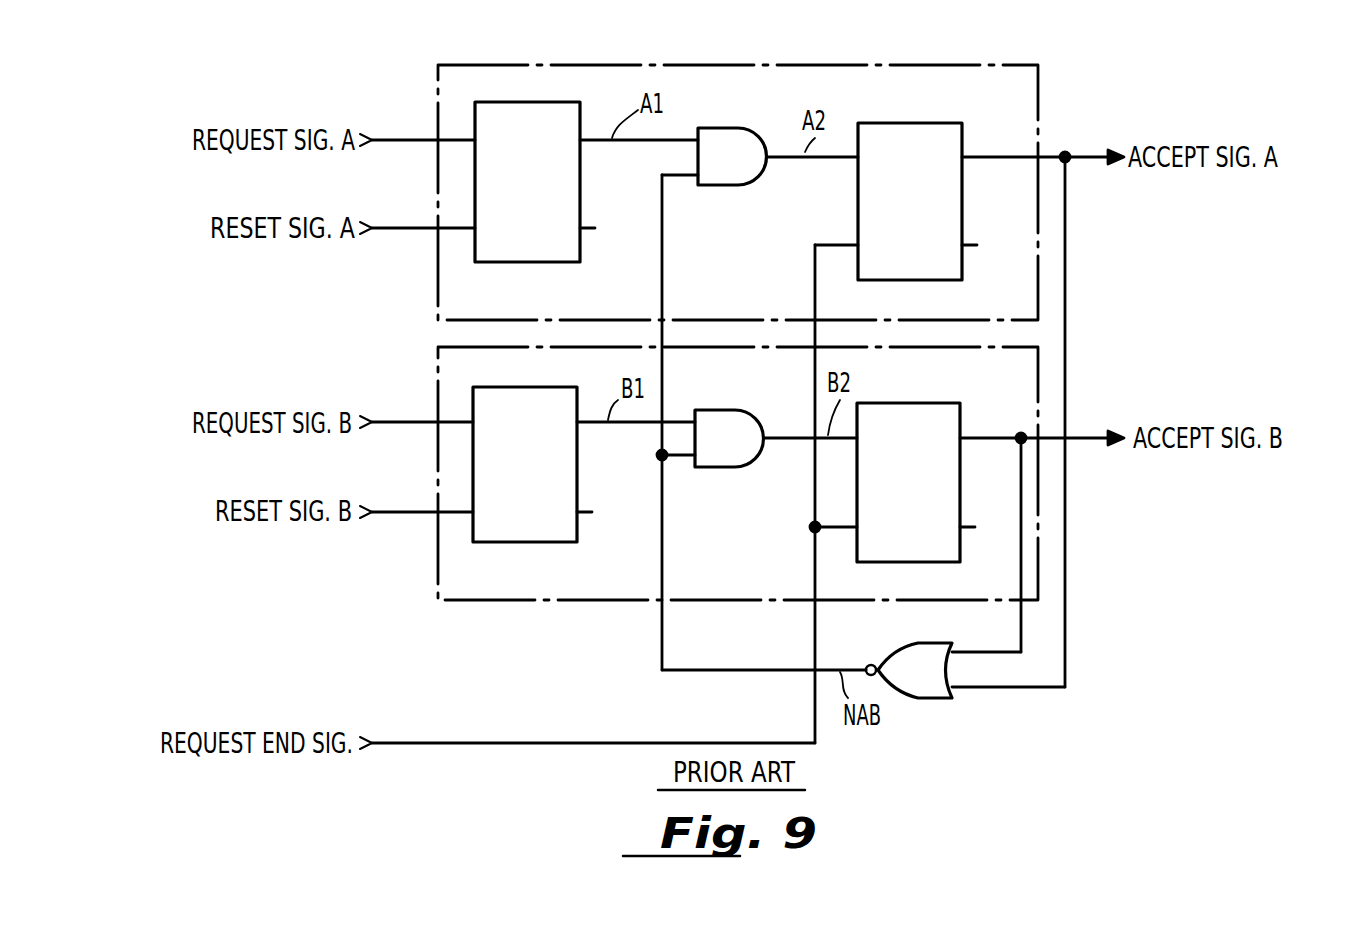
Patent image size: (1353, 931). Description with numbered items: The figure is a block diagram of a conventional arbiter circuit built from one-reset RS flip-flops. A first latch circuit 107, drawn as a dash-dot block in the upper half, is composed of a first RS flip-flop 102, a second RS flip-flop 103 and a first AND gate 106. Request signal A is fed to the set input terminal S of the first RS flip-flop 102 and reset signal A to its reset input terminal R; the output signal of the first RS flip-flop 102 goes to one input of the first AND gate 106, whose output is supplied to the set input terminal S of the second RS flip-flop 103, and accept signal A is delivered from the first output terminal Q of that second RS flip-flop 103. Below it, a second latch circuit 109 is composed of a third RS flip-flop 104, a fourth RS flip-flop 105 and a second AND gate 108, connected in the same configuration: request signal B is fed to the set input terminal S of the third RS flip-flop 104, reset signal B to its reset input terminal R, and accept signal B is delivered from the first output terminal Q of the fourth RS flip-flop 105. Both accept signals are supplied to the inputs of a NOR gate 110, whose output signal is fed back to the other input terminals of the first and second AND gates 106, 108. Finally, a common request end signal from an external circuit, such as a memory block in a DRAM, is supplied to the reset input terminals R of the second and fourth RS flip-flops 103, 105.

The first RS flip-flop 102 is at (522, 248).
The second RS flip-flop 103 is at (917, 267).
The third RS flip-flop 104 is at (512, 530).
The fourth RS flip-flop 105 is at (945, 553).
The first AND gate 106 is at (730, 140).
The first latch circuit 107 is at (733, 62).
The second AND gate 108 is at (722, 422).
The second latch circuit 109 is at (585, 602).
The NOR gate 110 is at (910, 665).